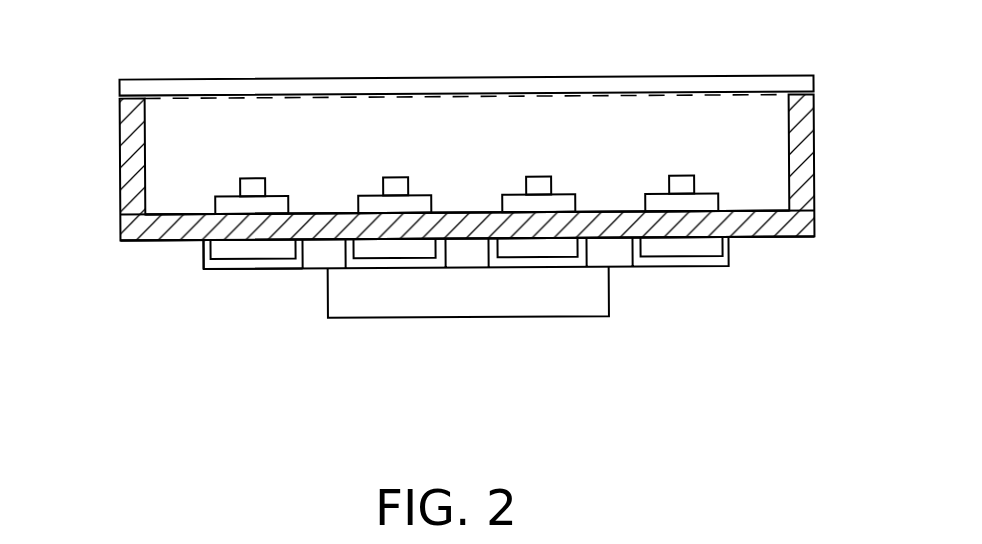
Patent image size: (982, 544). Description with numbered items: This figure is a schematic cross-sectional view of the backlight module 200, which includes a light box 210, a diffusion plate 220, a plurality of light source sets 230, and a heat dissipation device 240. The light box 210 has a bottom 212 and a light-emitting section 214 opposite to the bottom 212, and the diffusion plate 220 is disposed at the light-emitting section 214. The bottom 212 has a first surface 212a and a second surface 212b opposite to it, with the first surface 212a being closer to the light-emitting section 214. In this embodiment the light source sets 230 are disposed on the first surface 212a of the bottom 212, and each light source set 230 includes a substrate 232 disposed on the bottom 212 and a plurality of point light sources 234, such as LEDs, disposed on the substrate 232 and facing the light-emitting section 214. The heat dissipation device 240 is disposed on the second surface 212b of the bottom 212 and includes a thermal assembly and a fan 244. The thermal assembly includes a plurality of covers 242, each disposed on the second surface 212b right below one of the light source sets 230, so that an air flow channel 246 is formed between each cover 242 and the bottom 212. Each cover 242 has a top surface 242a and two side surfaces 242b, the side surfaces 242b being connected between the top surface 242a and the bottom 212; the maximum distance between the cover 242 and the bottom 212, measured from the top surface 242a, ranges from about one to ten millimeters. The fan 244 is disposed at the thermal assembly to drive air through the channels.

The backlight module 200 is at (458, 223).
The light box 210 is at (800, 173).
The bottom 212 is at (770, 223).
The first surface 212a is at (178, 212).
The second surface 212b is at (176, 242).
The light-emitting section 214 is at (182, 100).
The diffusion plate 220 is at (488, 78).
The light source set 230 is at (460, 290).
The substrate 232 is at (227, 204).
The point light source 234 is at (252, 187).
The heat dissipation device 240 is at (419, 333).
The cover 242 is at (657, 260).
The top surface 242a is at (215, 263).
The side surface 242b is at (200, 250).
The fan 244 is at (575, 307).
The air flow channel 246 is at (572, 380).